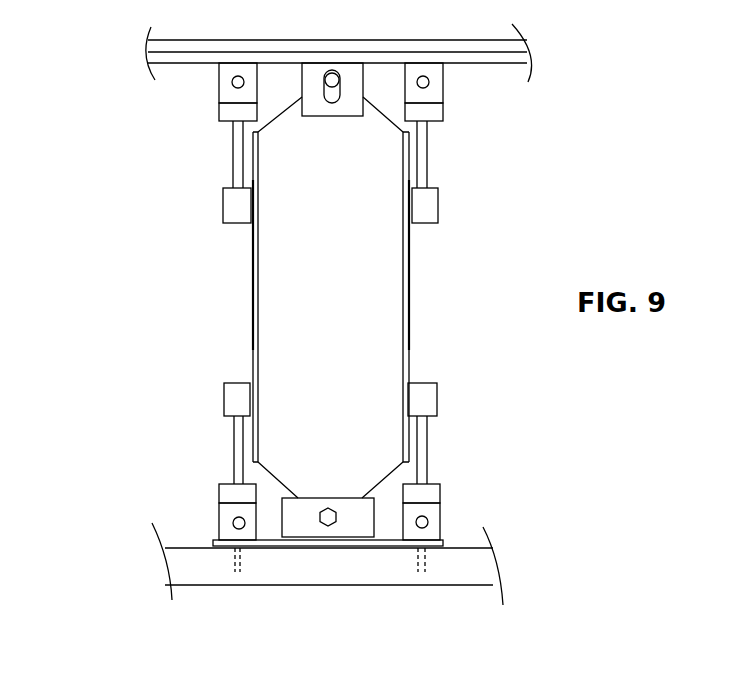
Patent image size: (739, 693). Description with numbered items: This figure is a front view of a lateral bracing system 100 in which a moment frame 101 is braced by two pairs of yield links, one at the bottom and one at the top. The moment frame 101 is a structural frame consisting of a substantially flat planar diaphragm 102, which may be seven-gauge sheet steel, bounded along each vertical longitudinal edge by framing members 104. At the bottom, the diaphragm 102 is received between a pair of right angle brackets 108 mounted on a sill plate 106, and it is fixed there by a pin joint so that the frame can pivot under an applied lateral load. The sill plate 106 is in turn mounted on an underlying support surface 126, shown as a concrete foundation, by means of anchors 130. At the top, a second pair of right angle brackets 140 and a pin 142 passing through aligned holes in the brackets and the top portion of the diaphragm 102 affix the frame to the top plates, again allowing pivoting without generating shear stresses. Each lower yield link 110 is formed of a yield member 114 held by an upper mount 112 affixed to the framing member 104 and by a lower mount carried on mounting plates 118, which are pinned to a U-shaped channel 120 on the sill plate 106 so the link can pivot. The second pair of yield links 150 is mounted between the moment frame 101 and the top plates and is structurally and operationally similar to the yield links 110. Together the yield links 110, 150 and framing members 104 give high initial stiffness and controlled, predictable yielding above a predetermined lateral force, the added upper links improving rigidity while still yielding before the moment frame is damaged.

The lateral bracing system 100 is at (153, 313).
The moment frame 101 is at (388, 297).
The diaphragm 102 is at (331, 297).
The framing members 104 is at (409, 268).
The sill plate 106 is at (372, 550).
The right angle brackets 108 is at (302, 528).
The yield links 110 is at (331, 474).
The upper mount 112 is at (430, 395).
The yield member 114 is at (427, 432).
The mounting plates 118 is at (438, 488).
The U-shaped channel 120 is at (433, 512).
The underlying support surface 126 is at (197, 565).
The anchors 130 is at (428, 567).
The right angle brackets 140 is at (312, 70).
The pin 142 is at (337, 72).
The yield links 150 is at (203, 130).